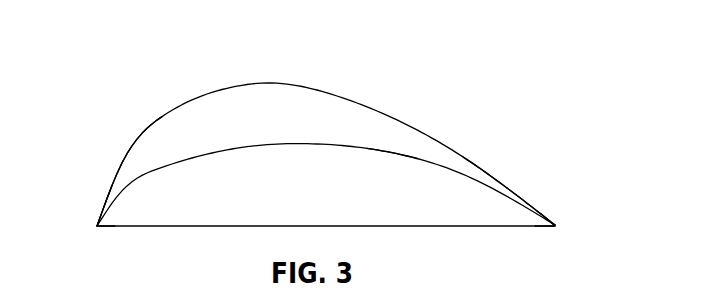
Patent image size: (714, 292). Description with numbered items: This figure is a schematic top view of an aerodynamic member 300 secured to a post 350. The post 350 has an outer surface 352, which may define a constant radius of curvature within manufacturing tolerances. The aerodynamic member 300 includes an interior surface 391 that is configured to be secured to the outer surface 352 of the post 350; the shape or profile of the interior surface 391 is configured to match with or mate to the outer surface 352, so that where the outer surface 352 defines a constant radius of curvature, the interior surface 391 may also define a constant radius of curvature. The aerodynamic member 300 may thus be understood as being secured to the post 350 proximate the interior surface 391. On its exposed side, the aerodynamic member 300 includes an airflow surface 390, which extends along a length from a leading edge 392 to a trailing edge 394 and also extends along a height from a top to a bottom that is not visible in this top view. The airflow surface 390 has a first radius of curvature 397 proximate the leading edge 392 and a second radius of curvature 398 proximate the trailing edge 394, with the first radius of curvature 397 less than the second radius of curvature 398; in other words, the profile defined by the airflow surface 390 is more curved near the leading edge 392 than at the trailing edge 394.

The aerodynamic member 300 is at (323, 150).
The airflow surface 390 is at (250, 83).
The outer surface 352 is at (415, 159).
The post 350 is at (360, 212).
The first radius of curvature 397 is at (117, 157).
The leading edge 392 is at (98, 211).
The second radius of curvature 398 is at (506, 173).
The trailing edge 394 is at (556, 212).
The interior surface 391 is at (392, 156).